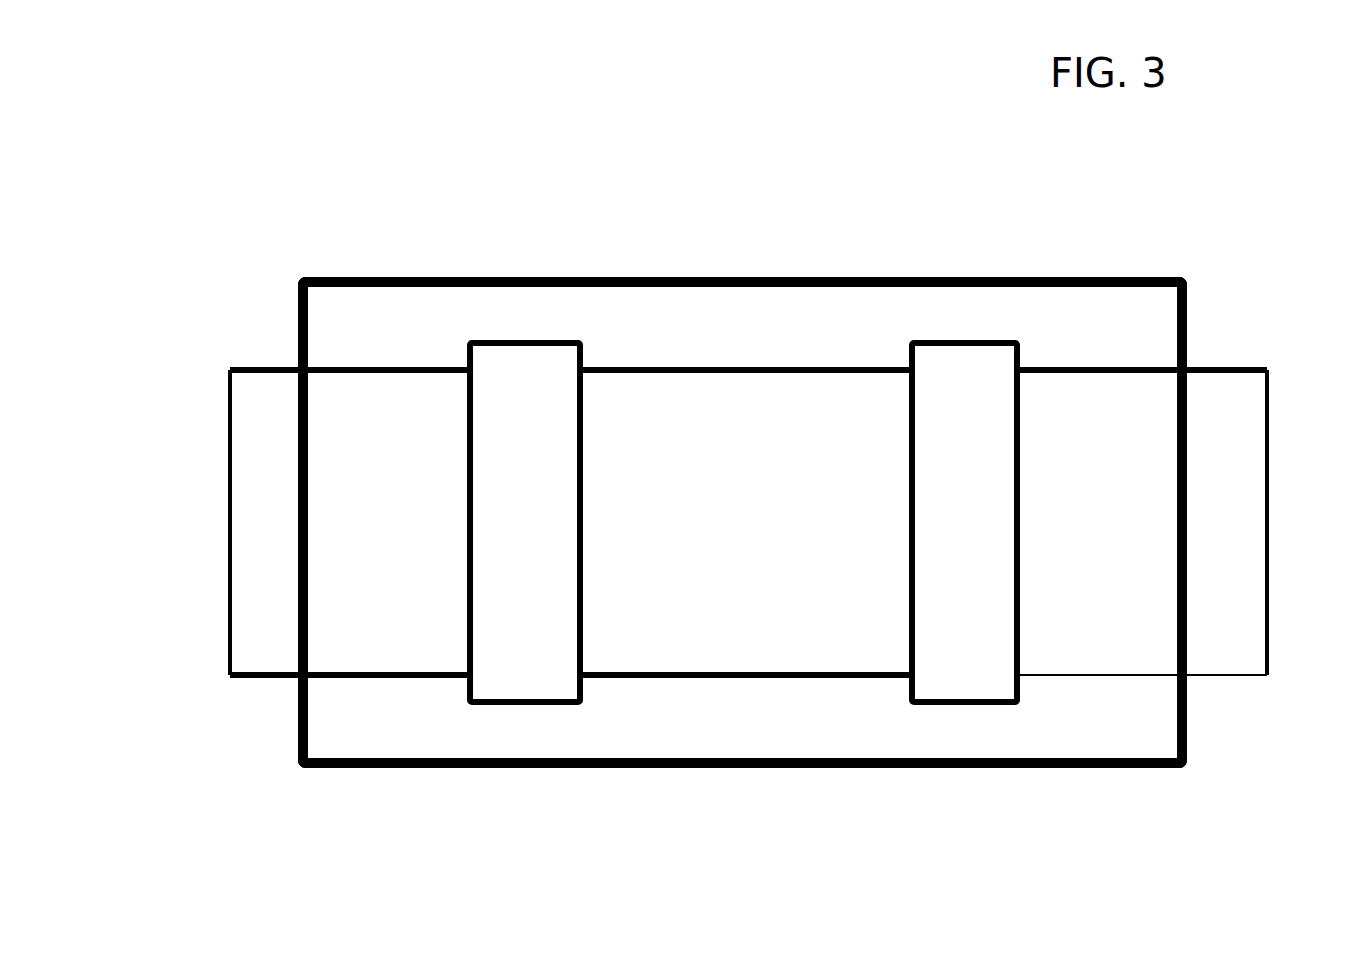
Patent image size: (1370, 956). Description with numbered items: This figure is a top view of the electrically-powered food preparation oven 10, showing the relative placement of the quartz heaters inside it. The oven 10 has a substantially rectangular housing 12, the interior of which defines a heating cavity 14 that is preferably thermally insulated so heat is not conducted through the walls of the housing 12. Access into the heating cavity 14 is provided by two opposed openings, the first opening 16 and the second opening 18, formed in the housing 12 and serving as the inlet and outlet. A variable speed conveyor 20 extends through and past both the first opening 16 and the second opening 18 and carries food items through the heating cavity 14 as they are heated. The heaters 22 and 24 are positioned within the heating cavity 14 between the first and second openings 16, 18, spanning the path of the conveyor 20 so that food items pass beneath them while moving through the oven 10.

The electrically-powered food preparation oven 10 is at (454, 196).
The housing 12 is at (663, 278).
The heating cavity 14 is at (742, 522).
The first opening 16 is at (268, 470).
The second opening 18 is at (1220, 595).
The variable speed conveyor 20 is at (1210, 369).
The heater 22 is at (525, 522).
The heater 24 is at (964, 522).